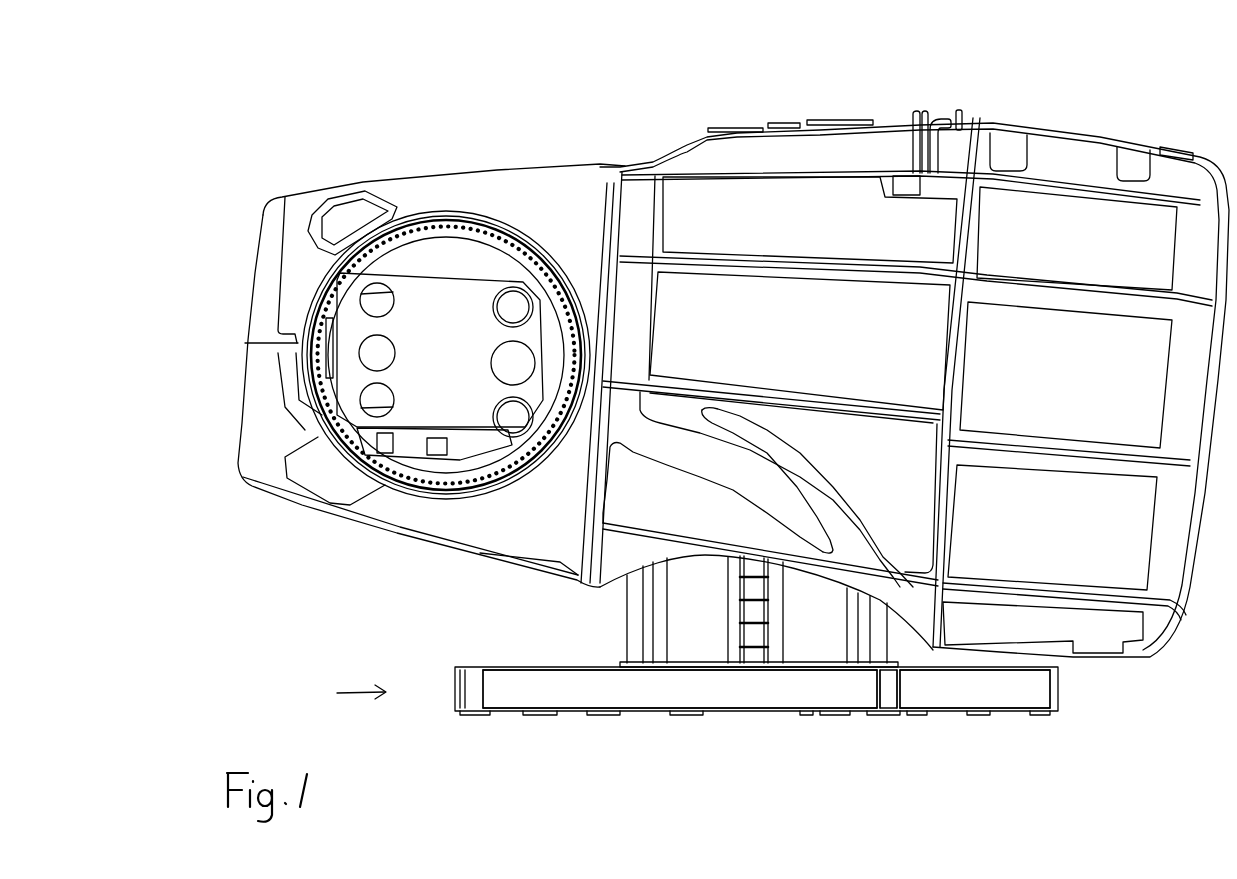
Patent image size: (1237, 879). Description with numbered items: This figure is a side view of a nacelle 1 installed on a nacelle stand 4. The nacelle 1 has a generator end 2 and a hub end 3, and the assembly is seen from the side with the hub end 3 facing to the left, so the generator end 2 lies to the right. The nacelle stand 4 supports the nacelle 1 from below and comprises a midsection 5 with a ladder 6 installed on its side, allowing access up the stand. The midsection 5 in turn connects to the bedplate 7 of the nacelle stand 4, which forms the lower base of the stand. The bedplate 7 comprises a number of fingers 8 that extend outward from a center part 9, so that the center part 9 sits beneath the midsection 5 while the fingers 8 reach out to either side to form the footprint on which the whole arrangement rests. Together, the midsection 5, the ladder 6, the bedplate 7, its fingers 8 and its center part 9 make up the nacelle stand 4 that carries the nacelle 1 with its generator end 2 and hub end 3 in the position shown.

The nacelle 1 is at (757, 73).
The generator end 2 is at (1063, 157).
The hub end 3 is at (433, 197).
The nacelle stand 4 is at (825, 750).
The midsection 5 is at (766, 611).
The ladder 6 is at (750, 663).
The bedplate 7 is at (341, 687).
The fingers 8 is at (537, 702).
The center part 9 is at (850, 712).